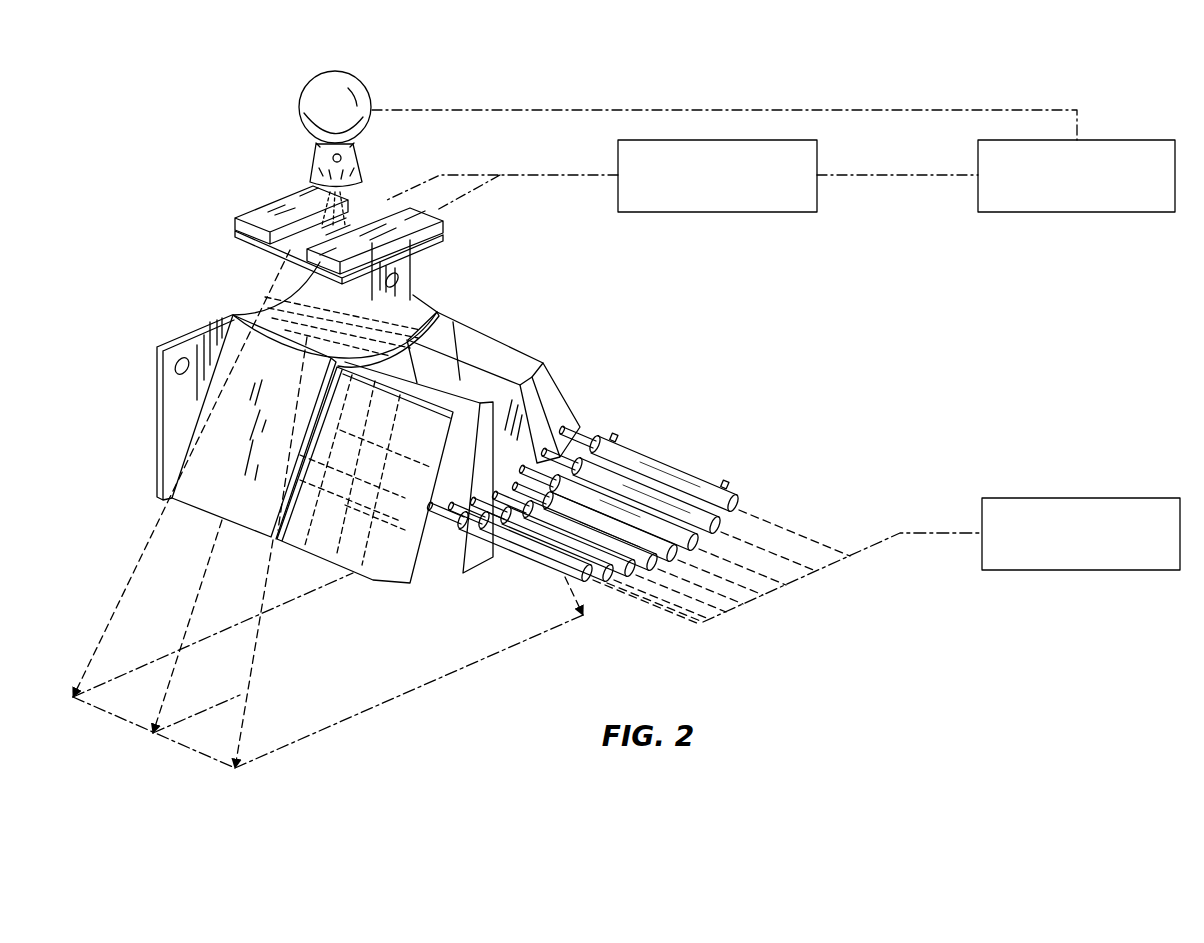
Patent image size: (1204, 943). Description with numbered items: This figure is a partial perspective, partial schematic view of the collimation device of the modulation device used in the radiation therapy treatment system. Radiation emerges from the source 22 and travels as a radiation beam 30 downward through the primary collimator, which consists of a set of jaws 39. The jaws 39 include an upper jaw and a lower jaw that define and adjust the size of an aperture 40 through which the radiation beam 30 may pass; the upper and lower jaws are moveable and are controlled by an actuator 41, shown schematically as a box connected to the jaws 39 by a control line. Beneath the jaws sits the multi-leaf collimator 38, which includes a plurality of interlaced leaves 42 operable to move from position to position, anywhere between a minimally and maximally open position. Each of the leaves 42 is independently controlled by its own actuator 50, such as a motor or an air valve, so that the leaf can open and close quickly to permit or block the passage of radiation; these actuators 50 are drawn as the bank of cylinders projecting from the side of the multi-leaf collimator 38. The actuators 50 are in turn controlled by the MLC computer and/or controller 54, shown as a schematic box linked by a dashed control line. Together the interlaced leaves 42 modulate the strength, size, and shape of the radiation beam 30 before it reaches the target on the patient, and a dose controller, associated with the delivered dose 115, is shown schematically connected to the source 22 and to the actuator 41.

The radiation source 22 is at (375, 57).
The radiation beam 30 is at (152, 527).
The multi-leaf collimator 38 is at (500, 337).
The jaws 39 is at (262, 250).
The aperture 40 is at (330, 215).
The actuator 41 is at (743, 201).
The leaves 42 is at (550, 413).
The actuator 50 is at (665, 493).
The MLC computer and/or controller 54 is at (1123, 517).
The dose 115 is at (1072, 206).